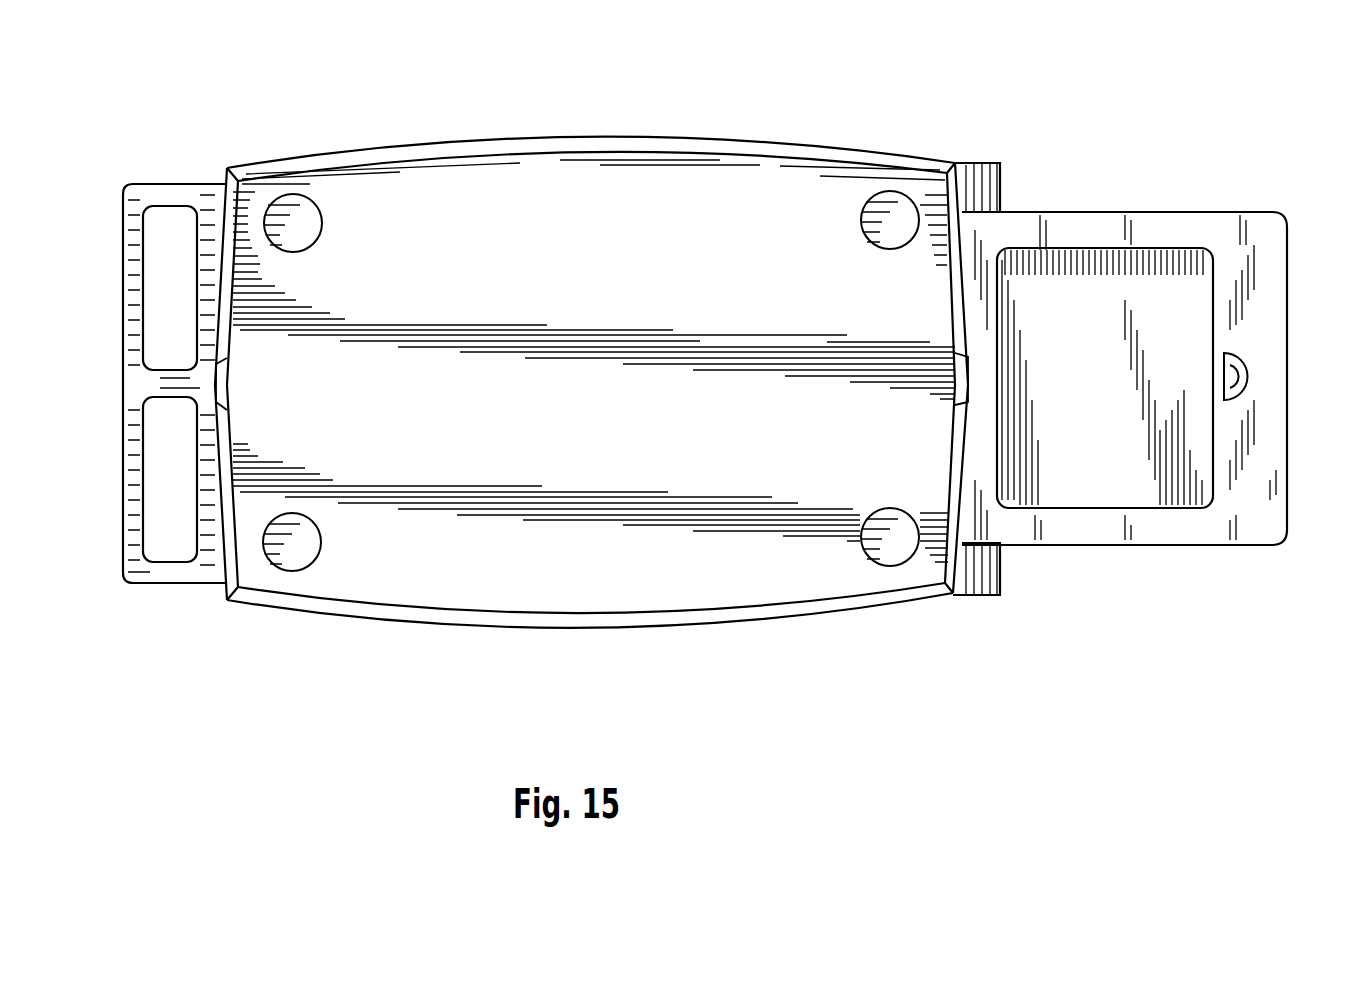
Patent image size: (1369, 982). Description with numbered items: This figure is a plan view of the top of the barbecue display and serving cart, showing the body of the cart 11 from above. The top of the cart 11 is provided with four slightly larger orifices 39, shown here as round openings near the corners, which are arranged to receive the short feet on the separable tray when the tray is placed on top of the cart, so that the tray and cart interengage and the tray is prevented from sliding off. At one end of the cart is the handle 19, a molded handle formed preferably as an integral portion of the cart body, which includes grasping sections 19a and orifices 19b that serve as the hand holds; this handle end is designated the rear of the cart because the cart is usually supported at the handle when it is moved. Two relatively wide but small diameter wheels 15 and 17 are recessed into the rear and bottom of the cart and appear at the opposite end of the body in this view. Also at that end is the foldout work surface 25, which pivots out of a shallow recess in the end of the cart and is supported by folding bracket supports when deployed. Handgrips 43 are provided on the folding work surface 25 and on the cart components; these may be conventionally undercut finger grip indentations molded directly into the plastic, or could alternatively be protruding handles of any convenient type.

The body of the cart 11 is at (475, 140).
The wheel 15 is at (970, 625).
The wheel 17 is at (950, 127).
The handle 19 is at (160, 186).
The grasping sections 19a is at (130, 237).
The orifices 19b is at (172, 318).
The foldout work surface 25 is at (1130, 225).
The orifices 39 is at (310, 230).
The handgrips 43 is at (218, 378).